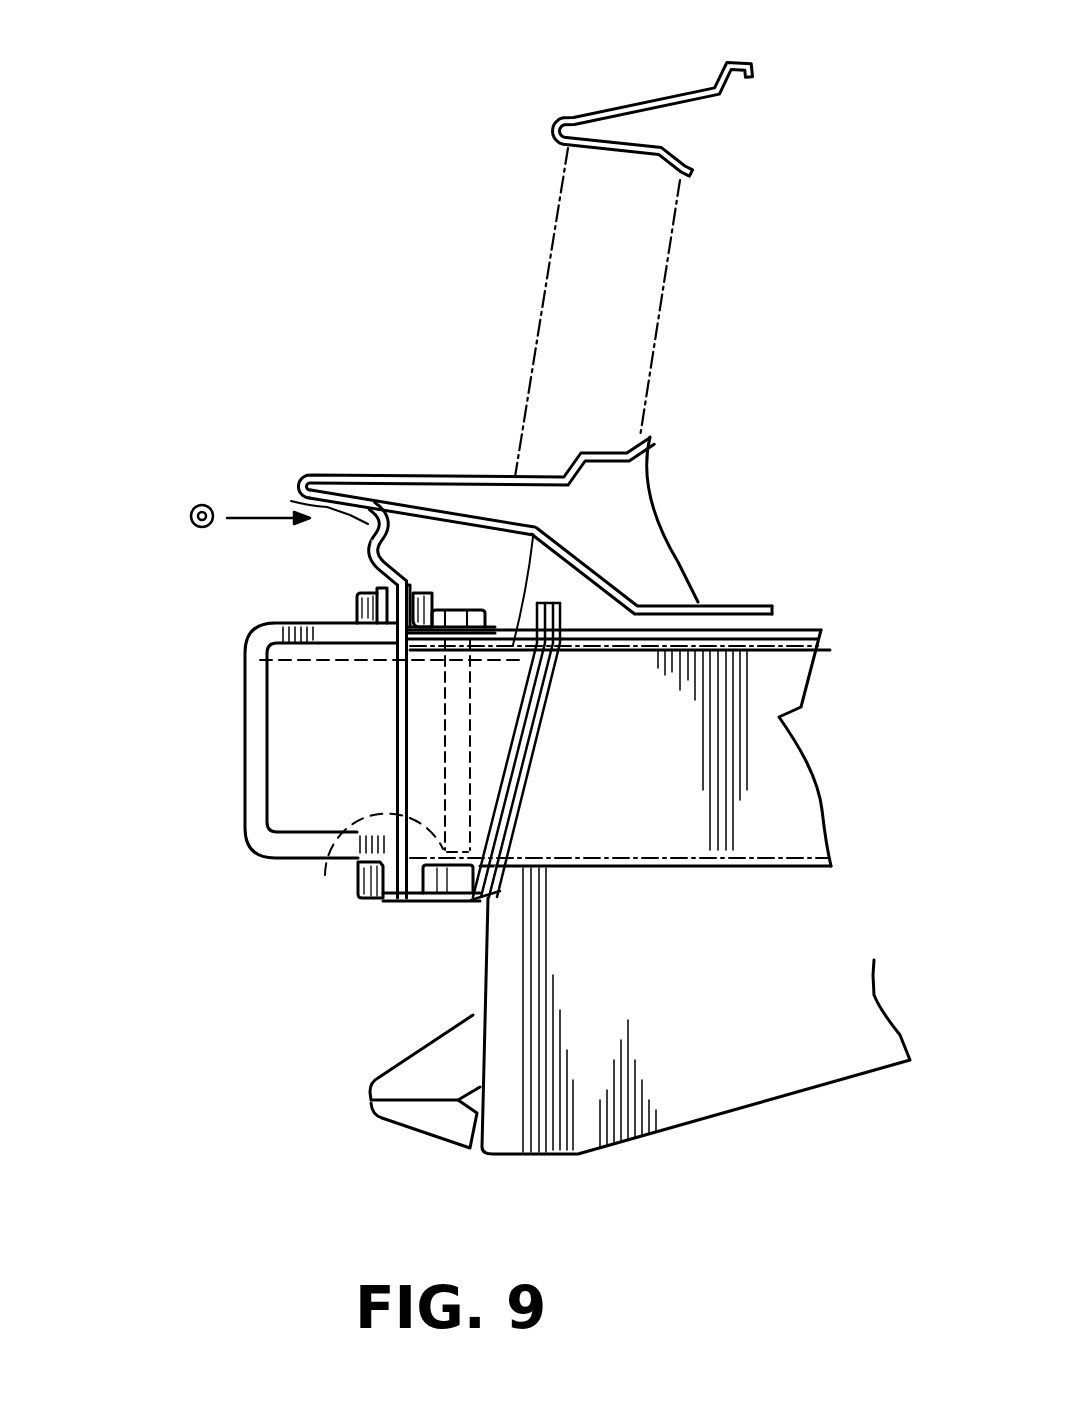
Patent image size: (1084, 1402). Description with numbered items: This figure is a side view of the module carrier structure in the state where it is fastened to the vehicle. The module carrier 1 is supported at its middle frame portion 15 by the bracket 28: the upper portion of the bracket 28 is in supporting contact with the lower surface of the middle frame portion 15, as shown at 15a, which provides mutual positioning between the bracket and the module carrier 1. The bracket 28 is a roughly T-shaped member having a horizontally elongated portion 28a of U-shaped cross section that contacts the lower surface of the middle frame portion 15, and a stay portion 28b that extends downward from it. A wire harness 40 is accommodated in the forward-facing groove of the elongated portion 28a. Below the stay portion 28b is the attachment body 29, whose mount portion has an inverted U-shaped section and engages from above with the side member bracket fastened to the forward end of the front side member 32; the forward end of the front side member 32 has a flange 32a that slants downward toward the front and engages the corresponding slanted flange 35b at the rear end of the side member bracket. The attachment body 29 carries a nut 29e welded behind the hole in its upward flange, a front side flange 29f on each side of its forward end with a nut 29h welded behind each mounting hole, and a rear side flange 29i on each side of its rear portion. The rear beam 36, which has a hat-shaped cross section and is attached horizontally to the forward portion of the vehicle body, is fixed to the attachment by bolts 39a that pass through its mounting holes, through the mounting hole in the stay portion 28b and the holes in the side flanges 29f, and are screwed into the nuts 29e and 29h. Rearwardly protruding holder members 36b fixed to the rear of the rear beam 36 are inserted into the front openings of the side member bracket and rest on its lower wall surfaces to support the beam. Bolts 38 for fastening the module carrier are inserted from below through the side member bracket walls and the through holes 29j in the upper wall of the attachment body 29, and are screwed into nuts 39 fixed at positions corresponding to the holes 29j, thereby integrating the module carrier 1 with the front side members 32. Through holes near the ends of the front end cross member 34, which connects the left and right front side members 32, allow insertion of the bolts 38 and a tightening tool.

The module carrier 1 is at (620, 108).
The middle frame portion 15 is at (323, 472).
The supporting contact of bracket with middle frame portion 15a is at (370, 500).
The bracket 28 is at (407, 555).
The horizontally elongated portion 28a is at (347, 510).
The stay portion 28b is at (380, 566).
The attachment body 29 is at (538, 527).
The nut 29e is at (431, 610).
The front side flange 29f is at (397, 742).
The nut 29h is at (428, 902).
The rear side flange 29i is at (530, 713).
The through hole 29j is at (262, 661).
The front side member 32 is at (703, 817).
The flange 32a is at (523, 787).
The front end cross member 34 is at (382, 1117).
The flange 35b is at (533, 678).
The rear beam 36 is at (245, 716).
The holder member 36b is at (330, 877).
The bolt 38 is at (450, 777).
The nut 39 is at (453, 613).
The bolt 39a is at (362, 600).
The wire harness 40 is at (200, 505).